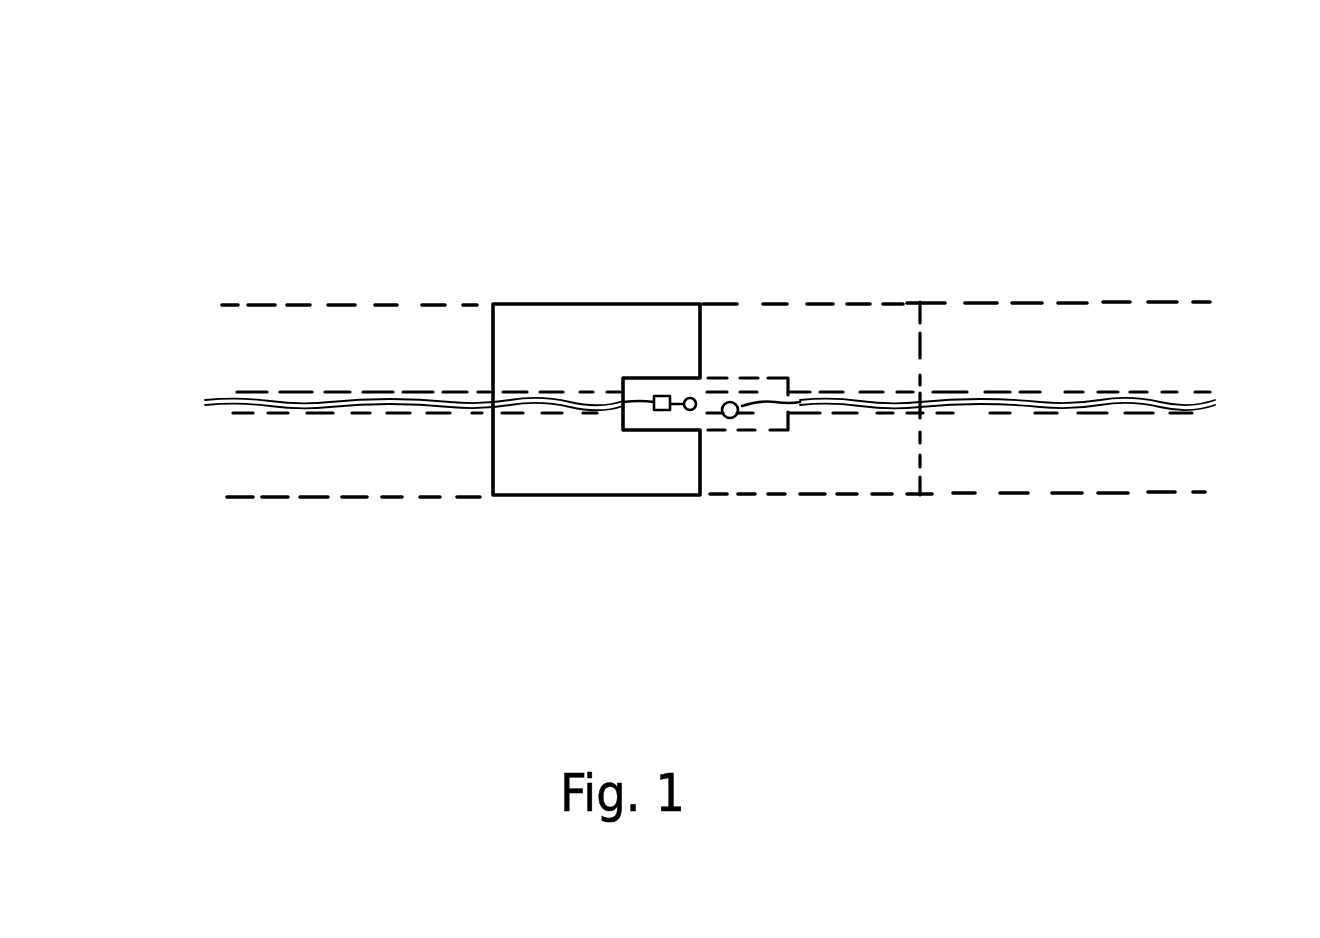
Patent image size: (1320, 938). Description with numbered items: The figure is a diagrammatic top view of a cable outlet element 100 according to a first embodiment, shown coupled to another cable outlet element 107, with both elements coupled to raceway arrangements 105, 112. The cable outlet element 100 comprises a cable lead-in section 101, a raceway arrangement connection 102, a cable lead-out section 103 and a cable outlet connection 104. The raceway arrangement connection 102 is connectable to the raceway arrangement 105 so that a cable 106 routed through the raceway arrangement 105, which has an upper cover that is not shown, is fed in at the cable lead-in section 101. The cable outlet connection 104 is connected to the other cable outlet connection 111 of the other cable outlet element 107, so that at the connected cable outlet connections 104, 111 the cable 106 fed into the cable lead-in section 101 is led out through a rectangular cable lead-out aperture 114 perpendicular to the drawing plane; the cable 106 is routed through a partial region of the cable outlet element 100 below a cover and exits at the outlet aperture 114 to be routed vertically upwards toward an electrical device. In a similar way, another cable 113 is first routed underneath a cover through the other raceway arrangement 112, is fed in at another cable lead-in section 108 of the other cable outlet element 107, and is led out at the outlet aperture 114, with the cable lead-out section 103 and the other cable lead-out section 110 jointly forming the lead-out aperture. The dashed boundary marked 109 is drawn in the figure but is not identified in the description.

The cable outlet element 100 is at (610, 177).
The cable lead-in section 101 is at (457, 397).
The raceway arrangement connection 102 is at (478, 458).
The cable lead-out section 103 is at (671, 388).
The cable outlet connection 104 is at (718, 347).
The raceway arrangement 105 is at (294, 303).
The cable 106 is at (207, 402).
The other cable outlet element 107 is at (886, 293).
The other cable lead-in section 108 is at (930, 410).
The partition 109 is at (942, 353).
The other cable lead-out section 110 is at (783, 390).
The other cable outlet connection 111 is at (685, 473).
The other raceway arrangement 112 is at (1113, 303).
The other cable 113 is at (1215, 402).
The cable lead-out aperture 114 is at (663, 418).